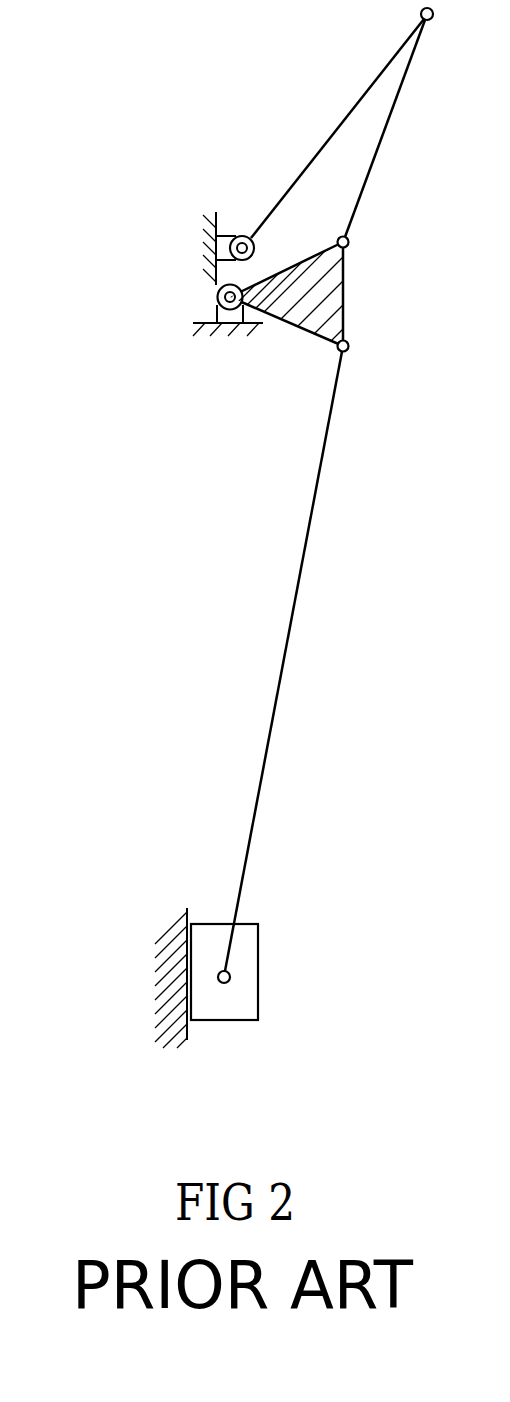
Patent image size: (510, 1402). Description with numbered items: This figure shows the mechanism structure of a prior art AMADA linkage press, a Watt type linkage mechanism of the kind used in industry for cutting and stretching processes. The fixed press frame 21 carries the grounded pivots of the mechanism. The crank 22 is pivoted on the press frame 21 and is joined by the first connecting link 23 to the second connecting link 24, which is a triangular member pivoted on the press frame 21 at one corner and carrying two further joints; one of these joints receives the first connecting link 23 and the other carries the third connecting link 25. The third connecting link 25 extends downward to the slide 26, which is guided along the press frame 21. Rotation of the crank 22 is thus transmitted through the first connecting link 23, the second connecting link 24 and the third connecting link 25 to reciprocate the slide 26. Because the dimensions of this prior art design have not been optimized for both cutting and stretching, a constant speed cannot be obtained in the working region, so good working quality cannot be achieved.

The press frame 21 is at (211, 248).
The crank 22 is at (342, 123).
The connecting link 1 23 is at (386, 134).
The connecting link 2 24 is at (294, 316).
The connecting link 3 25 is at (292, 662).
The slide 26 is at (232, 978).